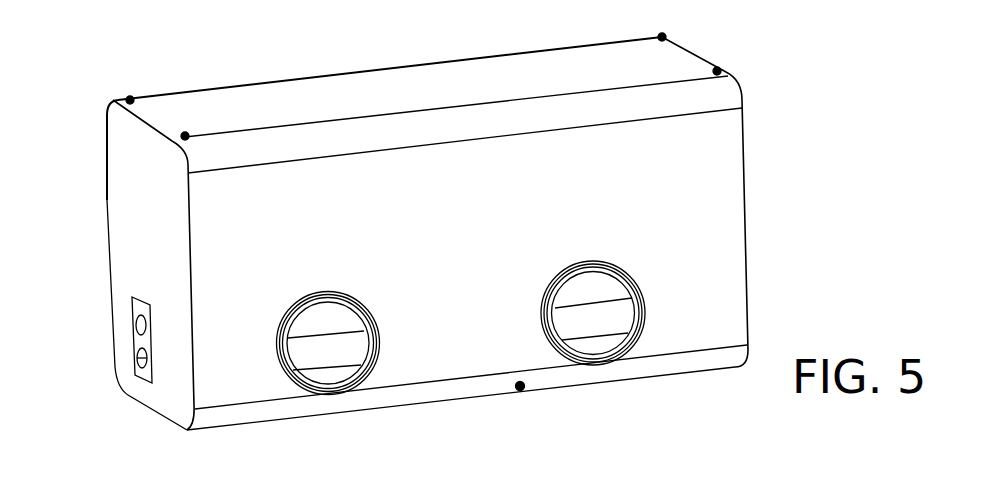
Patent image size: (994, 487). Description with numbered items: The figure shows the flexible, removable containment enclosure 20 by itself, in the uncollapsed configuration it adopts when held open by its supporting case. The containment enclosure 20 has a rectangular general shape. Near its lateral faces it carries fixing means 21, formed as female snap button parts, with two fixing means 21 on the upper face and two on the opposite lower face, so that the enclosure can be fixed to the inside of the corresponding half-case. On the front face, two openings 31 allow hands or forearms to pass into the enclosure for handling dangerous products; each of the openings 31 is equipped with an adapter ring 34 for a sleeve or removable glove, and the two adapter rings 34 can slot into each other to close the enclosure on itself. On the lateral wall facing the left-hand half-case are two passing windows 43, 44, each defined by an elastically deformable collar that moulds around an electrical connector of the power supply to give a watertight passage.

The containment enclosure 20 is at (707, 178).
The fixing means 21 is at (185, 133).
The openings 31 is at (333, 361).
The adapter ring 34 is at (378, 348).
The passing window 43 is at (135, 323).
The passing window 44 is at (136, 362).